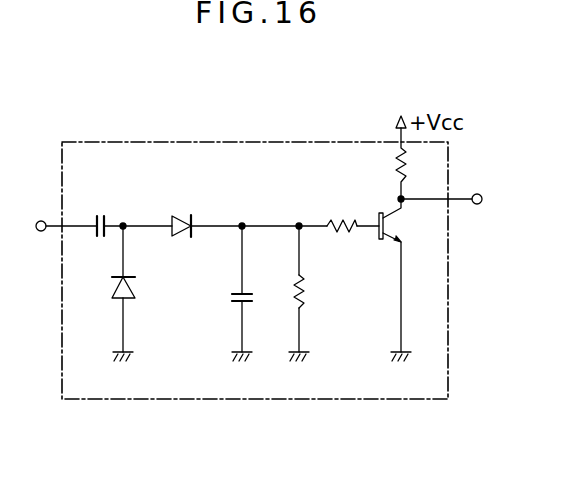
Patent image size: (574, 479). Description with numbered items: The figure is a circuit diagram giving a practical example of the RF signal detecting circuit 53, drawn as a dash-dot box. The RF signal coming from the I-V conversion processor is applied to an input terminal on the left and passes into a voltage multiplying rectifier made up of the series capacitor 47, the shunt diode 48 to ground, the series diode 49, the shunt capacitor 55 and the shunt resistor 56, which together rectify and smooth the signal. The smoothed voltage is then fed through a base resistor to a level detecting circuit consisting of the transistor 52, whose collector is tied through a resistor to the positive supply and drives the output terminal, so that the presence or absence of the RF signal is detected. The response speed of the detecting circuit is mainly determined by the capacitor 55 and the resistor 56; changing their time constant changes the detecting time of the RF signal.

The capacitor 47 is at (103, 212).
The diode 48 is at (113, 287).
The diode 49 is at (182, 214).
The transistor 52 is at (389, 245).
The RF signal detecting circuit 53 is at (427, 400).
The capacitor 55 is at (232, 297).
The resistor 56 is at (306, 297).